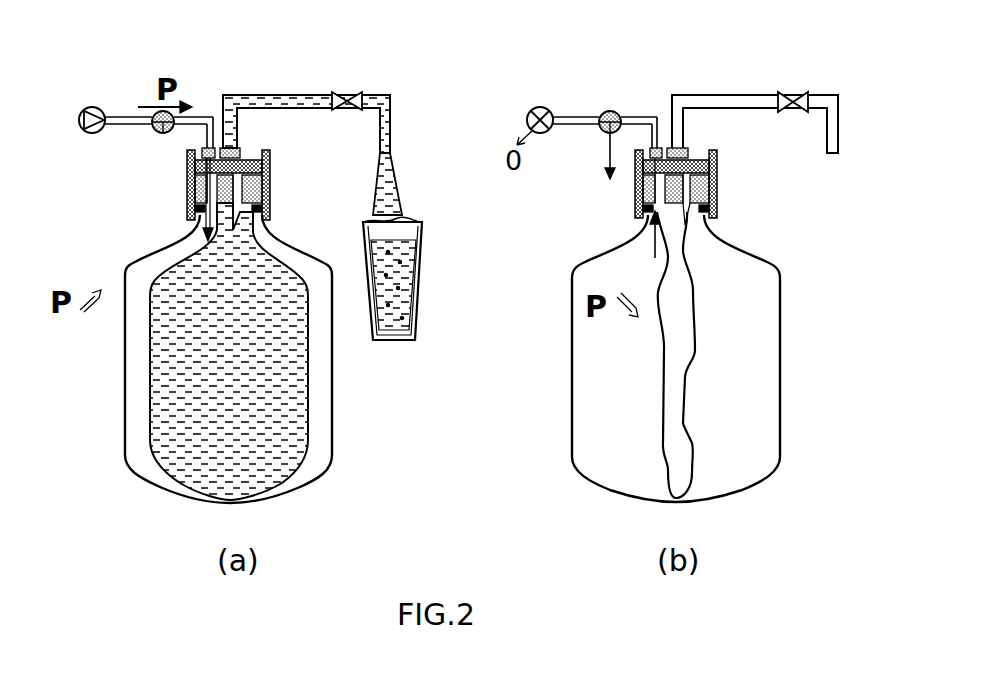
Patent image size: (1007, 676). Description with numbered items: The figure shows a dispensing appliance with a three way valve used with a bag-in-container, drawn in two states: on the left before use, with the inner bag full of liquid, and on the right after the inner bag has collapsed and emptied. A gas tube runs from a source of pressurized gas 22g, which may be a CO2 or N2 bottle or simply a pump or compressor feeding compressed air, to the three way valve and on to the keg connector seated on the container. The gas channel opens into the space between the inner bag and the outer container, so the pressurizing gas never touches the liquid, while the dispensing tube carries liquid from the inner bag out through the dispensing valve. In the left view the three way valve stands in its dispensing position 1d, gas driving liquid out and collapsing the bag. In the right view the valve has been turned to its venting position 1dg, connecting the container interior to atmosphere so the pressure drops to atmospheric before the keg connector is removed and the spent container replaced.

The source of pressurized gas 22g is at (92, 133).
The dispensing position of three way valve 1d is at (160, 135).
The venting position of three way valve 1dg is at (601, 134).